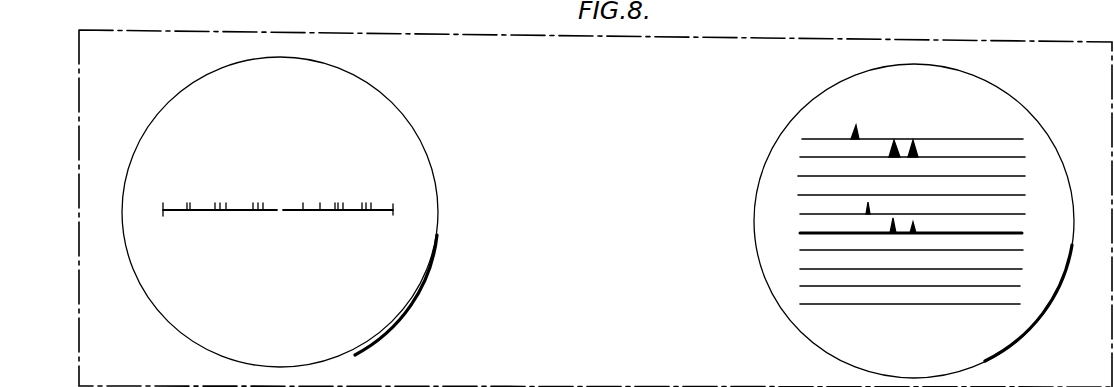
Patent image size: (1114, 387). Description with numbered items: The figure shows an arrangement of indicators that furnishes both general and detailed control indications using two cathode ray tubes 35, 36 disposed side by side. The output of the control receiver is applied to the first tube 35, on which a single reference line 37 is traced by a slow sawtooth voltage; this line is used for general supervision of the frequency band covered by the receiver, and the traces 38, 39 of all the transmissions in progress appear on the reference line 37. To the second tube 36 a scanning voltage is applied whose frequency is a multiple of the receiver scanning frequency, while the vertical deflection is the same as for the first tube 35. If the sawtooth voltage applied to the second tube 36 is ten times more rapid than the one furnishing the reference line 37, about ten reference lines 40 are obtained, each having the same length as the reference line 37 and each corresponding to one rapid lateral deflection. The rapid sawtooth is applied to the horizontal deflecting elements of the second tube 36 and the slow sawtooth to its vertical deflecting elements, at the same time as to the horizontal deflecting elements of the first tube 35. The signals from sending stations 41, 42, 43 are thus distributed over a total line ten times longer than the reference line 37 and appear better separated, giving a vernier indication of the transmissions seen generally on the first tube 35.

The first cathode ray tube 35 is at (401, 112).
The second cathode ray tube 36 is at (1033, 119).
The reference line 37 is at (252, 211).
The trace 38 is at (187, 205).
The trace 39 is at (190, 205).
The reference lines 40 is at (813, 231).
The signal from sending station 41 is at (857, 126).
The signal from sending station 42 is at (898, 142).
The signal from sending station 43 is at (918, 142).